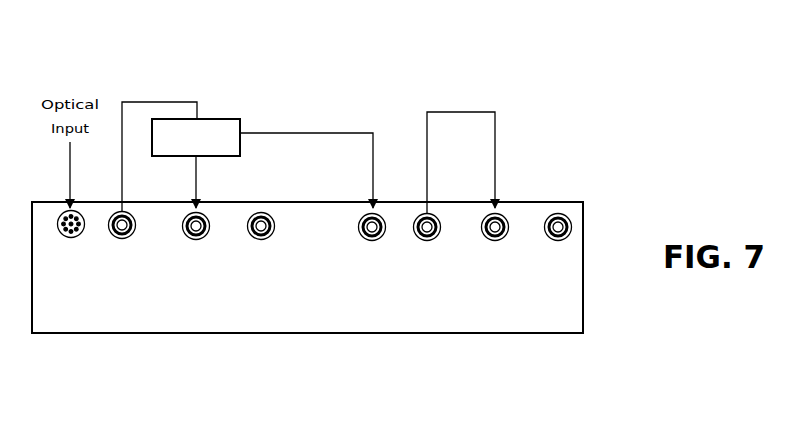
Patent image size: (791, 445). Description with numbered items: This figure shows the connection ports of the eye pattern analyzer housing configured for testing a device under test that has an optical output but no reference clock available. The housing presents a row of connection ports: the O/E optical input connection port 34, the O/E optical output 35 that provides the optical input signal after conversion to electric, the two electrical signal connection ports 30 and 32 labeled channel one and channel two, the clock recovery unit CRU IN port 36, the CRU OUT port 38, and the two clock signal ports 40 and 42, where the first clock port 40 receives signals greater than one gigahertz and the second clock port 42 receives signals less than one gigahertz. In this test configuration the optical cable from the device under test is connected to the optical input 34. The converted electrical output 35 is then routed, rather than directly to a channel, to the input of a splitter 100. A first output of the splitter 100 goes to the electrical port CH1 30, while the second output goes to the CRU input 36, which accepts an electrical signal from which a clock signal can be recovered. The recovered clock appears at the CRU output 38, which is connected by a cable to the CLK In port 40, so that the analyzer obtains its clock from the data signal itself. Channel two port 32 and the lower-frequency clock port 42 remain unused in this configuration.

The splitter 100 is at (227, 157).
The O/E optical input connection port 34 is at (62, 232).
The O/E optical output 35 is at (112, 234).
The electrical signal connection port (channel 1) 30 is at (187, 235).
The electrical signal connection port (channel 2) 32 is at (252, 235).
The CRU input port 36 is at (363, 236).
The CRU output port 38 is at (418, 236).
The first clock port ( 1 GHz CLK IN) 40 is at (486, 236).
The second clock port ( 1 GHz CLK IN) 42 is at (549, 236).